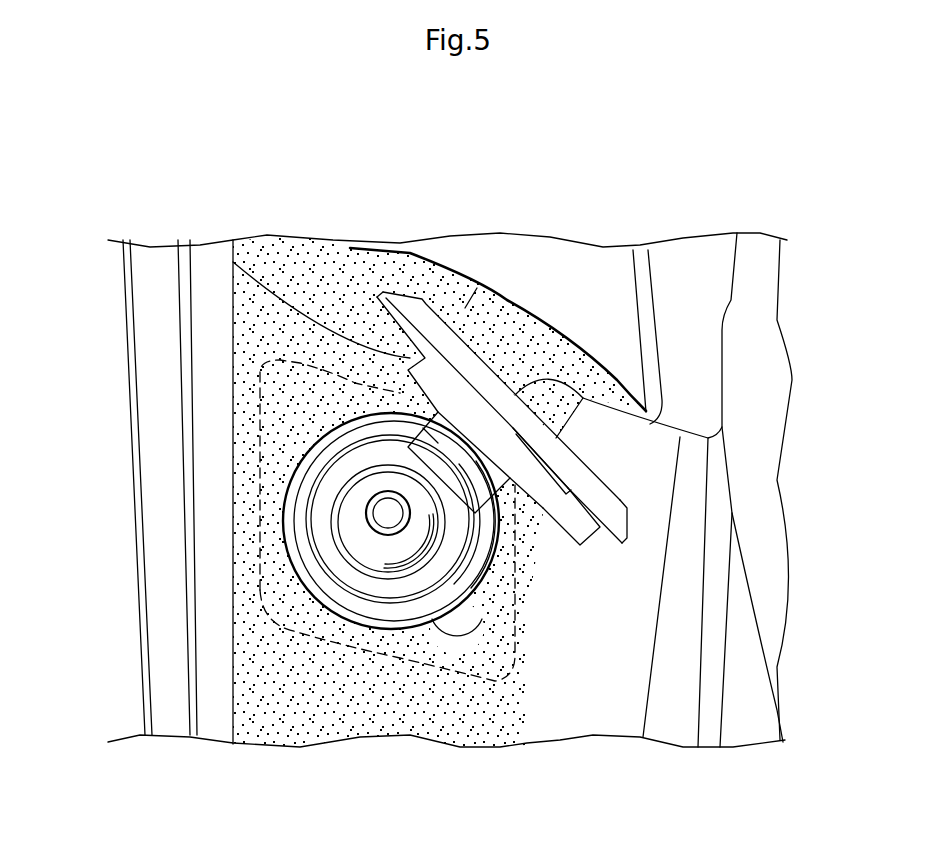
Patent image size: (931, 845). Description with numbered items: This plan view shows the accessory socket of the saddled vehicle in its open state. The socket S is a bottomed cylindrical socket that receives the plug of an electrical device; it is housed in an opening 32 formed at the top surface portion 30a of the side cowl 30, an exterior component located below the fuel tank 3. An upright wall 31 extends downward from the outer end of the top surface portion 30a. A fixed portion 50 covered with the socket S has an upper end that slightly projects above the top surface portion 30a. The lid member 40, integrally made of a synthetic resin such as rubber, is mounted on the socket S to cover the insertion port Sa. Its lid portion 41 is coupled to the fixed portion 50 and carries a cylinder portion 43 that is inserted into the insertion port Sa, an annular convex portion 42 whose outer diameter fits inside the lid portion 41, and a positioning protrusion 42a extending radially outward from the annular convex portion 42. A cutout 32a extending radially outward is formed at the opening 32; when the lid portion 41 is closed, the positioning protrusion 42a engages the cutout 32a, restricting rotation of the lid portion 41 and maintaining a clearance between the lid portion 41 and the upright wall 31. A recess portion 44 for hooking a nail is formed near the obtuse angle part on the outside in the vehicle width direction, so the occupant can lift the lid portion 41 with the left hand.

The fuel tank 3 is at (762, 384).
The side cowl 30 is at (230, 572).
The top surface portion 30a is at (262, 653).
The upright wall 31 is at (348, 275).
The opening 32 is at (347, 602).
The cutout 32a is at (462, 633).
The lid member 40 is at (495, 367).
The lid portion 41 is at (432, 318).
The annular convex portion 42 is at (440, 408).
The positioning protrusion 42a is at (577, 527).
The cylinder portion 43 is at (425, 432).
The recess portion 44 is at (545, 510).
The fixed portion 50 is at (320, 513).
The socket S is at (370, 483).
The insertion port Sa is at (357, 527).